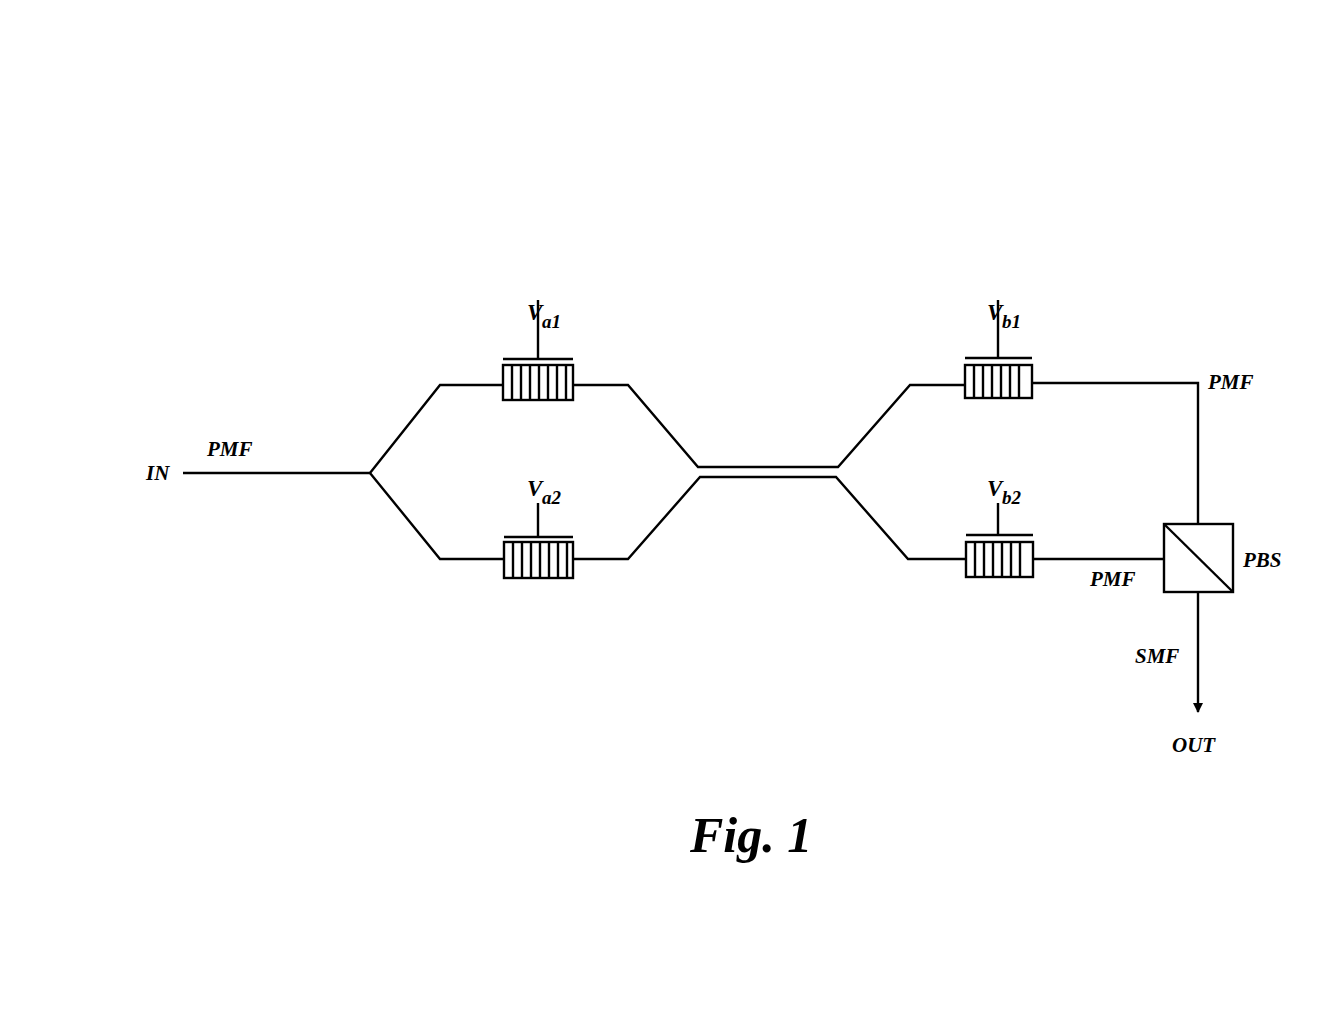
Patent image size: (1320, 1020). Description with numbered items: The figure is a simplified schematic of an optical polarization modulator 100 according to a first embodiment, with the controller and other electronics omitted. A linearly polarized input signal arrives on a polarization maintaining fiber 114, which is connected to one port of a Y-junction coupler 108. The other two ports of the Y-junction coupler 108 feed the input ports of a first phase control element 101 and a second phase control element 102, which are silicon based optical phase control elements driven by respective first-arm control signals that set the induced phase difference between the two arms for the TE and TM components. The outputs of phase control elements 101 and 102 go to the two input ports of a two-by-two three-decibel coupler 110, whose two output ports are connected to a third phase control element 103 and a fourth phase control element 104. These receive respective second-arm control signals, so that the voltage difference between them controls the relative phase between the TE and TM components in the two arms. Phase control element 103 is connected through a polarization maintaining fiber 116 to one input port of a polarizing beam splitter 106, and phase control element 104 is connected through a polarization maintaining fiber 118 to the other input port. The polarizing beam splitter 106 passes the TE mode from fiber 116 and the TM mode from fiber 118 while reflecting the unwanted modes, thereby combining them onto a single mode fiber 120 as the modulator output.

The optical polarization modulator 100 is at (1228, 158).
The phase control element 101 is at (548, 400).
The phase control element 102 is at (555, 578).
The phase control element 103 is at (1010, 398).
The phase control element 104 is at (1018, 577).
The polarizing beam splitter 106 is at (1224, 592).
The Y-junction coupler 108 is at (362, 448).
The 2×2 3-dB coupler 110 is at (736, 500).
The polarization maintaining fiber 114 is at (286, 475).
The polarization maintaining fiber 116 is at (1120, 380).
The polarization maintaining fiber 118 is at (1107, 557).
The single mode fiber 120 is at (1200, 654).